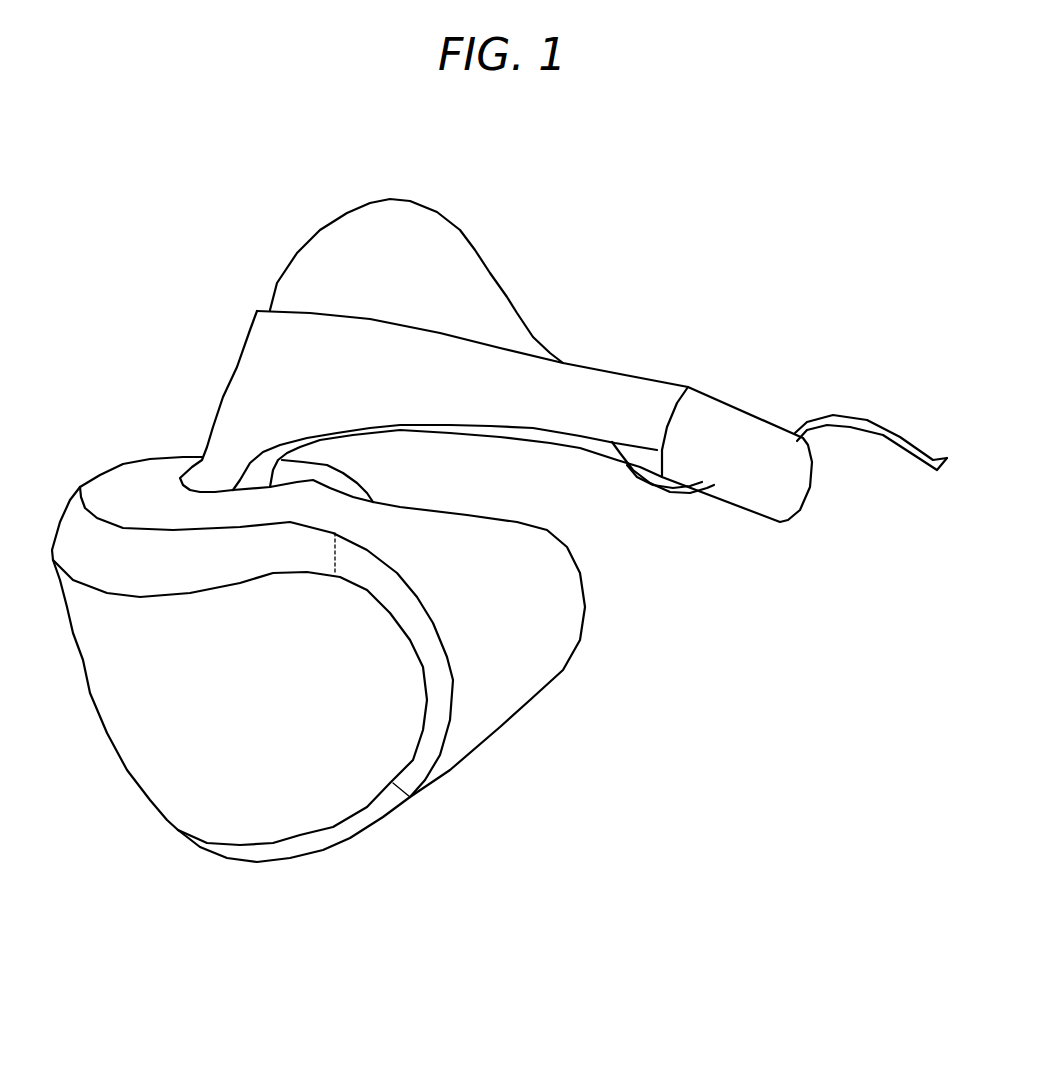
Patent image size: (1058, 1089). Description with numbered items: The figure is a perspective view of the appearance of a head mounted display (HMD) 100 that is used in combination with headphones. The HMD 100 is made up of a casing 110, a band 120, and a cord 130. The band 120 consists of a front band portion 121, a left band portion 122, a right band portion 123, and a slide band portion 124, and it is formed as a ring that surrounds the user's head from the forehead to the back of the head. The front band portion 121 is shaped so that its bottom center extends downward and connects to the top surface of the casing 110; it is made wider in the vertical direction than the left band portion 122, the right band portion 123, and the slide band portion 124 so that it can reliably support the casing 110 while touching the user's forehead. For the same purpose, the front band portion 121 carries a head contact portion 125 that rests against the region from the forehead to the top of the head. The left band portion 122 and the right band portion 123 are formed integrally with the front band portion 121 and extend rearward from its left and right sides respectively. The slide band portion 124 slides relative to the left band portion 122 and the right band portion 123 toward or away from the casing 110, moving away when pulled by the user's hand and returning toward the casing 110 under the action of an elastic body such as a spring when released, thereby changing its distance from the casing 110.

The head mounted display 100 is at (618, 204).
The casing 110 is at (337, 847).
The band 120 is at (214, 421).
The front band portion 121 is at (248, 336).
The left band portion 122 is at (620, 375).
The right band portion 123 is at (583, 450).
The slide band portion 124 is at (760, 418).
The head contact portion 125 is at (317, 234).
The cord 130 is at (883, 437).